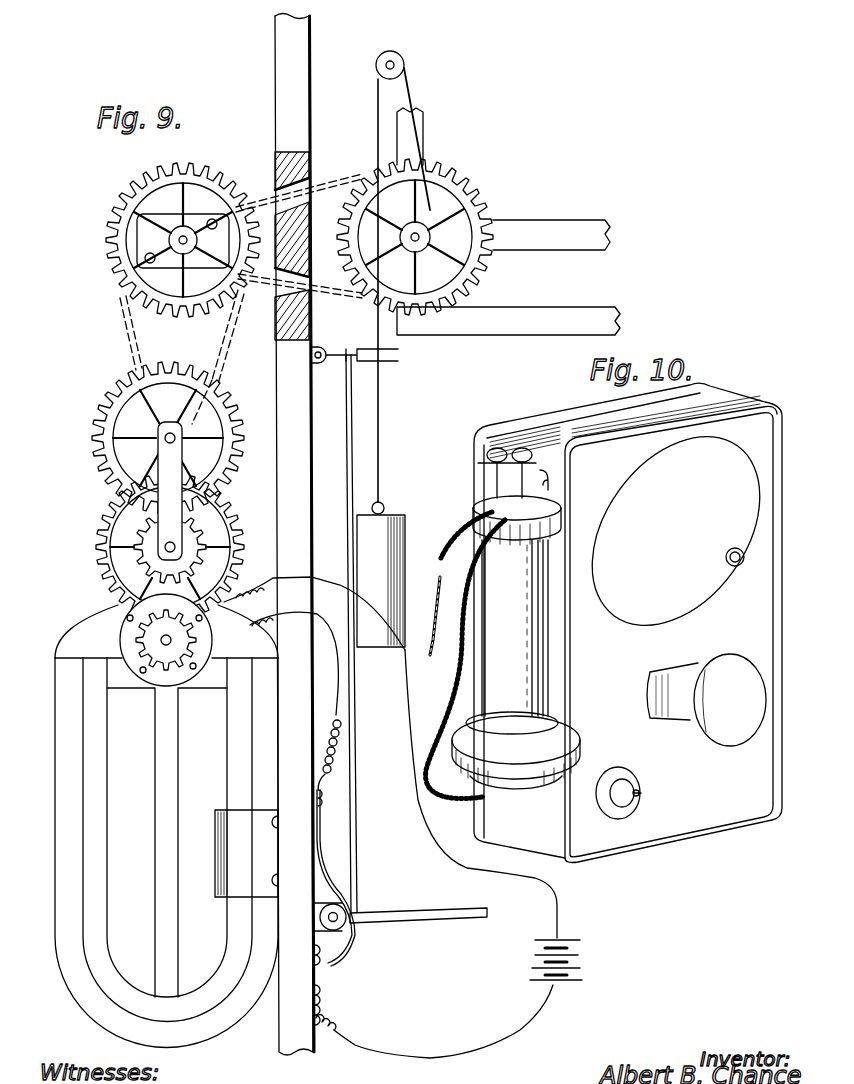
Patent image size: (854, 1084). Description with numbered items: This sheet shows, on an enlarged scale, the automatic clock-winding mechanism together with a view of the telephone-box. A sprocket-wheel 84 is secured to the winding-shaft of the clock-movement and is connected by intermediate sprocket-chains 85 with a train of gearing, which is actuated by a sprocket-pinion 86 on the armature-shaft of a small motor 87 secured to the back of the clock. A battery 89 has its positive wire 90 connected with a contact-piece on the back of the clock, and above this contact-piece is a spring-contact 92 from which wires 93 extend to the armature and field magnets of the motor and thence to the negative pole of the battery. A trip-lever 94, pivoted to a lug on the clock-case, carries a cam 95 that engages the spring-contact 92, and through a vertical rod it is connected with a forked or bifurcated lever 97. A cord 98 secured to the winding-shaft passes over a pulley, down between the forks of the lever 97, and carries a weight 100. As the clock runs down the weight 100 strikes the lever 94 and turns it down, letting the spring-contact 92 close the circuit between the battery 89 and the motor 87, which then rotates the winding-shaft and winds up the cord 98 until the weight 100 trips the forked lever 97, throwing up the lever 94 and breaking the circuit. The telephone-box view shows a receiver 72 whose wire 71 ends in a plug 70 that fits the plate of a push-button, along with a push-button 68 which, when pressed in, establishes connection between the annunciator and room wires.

In FIG. 10, the push-button 68 is at (641, 793).
In FIG. 10, the plug 70 is at (464, 659).
In FIG. 10, the wire 71 is at (463, 516).
In FIG. 10, the receiver 72 is at (516, 618).
In FIG. 9, the sprocket-wheel 84 is at (466, 190).
In FIG. 9, the sprocket-chains 85 is at (348, 186).
In FIG. 9, the sprocket-pinion 86 is at (102, 632).
In FIG. 9, the motor 87 is at (166, 826).
In FIG. 9, the battery 89 is at (493, 815).
In FIG. 9, the positive wire 90 is at (516, 1036).
In FIG. 9, the spring-contact 92 is at (336, 880).
In FIG. 9, the wires 93 is at (314, 691).
In FIG. 9, the trip-lever 94 is at (448, 898).
In FIG. 9, the cam 95 is at (340, 930).
In FIG. 9, the forked lever 97 is at (355, 619).
In FIG. 9, the cord 98 is at (384, 453).
In FIG. 9, the weight 100 is at (381, 574).